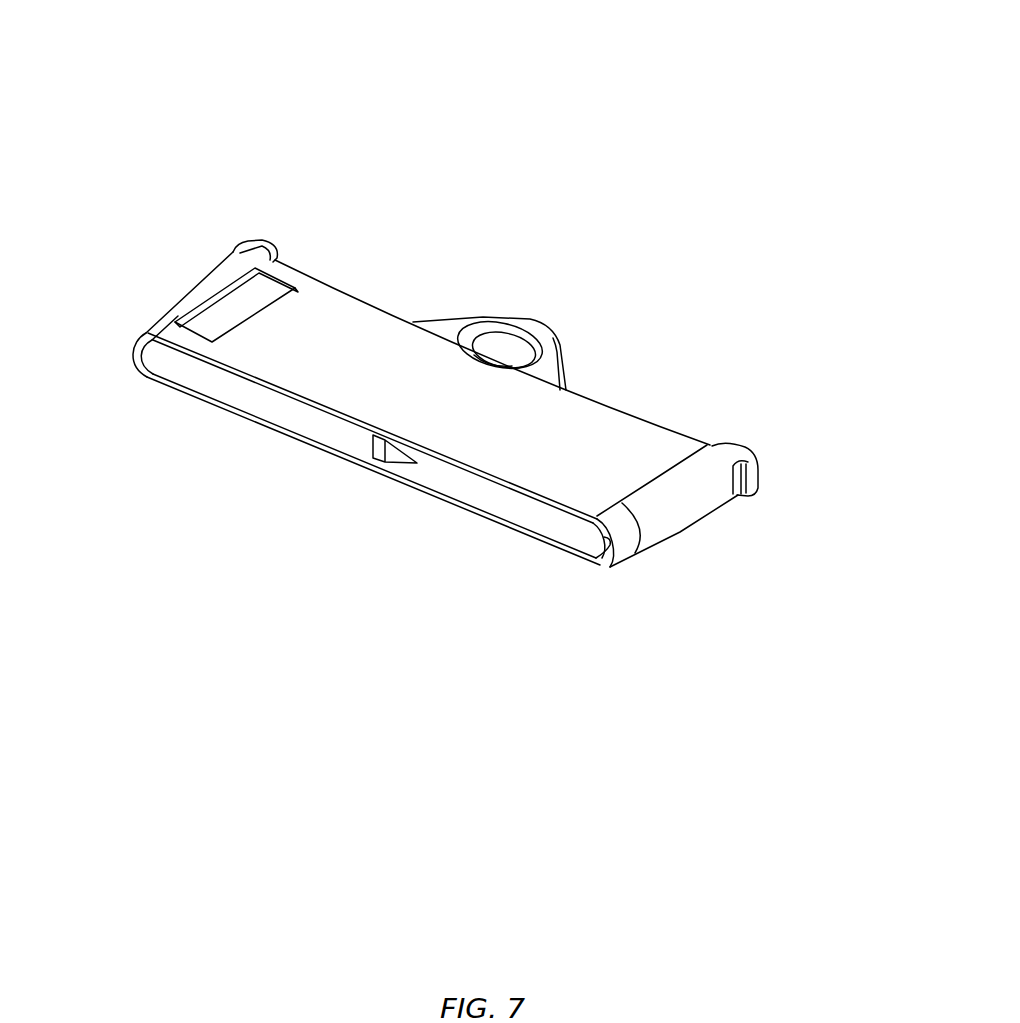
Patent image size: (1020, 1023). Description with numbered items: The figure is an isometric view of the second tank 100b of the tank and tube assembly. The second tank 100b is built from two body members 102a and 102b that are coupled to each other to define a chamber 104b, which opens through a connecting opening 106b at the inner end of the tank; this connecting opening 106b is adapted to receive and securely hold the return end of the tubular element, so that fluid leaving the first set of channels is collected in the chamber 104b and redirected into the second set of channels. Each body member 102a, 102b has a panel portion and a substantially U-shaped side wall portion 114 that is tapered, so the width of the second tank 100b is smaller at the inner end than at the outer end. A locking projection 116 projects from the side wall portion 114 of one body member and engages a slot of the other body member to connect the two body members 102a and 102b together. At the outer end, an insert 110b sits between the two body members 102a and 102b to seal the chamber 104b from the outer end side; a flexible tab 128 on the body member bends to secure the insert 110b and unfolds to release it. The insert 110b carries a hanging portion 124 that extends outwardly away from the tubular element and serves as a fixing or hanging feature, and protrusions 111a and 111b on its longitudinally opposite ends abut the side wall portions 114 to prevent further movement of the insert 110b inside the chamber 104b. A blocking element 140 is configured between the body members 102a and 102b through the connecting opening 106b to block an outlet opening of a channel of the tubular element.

The second tank 100b is at (550, 150).
The body member 102a is at (600, 422).
The body member 102b is at (520, 533).
The chamber 104b is at (312, 424).
The connecting opening 106b is at (220, 390).
The insert 110b is at (570, 356).
The protrusion 111a is at (253, 245).
The protrusion 111b is at (730, 452).
The side wall portion 114 is at (667, 517).
The locking projection 116 is at (203, 328).
The hanging portion 124 is at (542, 324).
The flexible tab 128 is at (478, 352).
The blocking element 140 is at (384, 445).